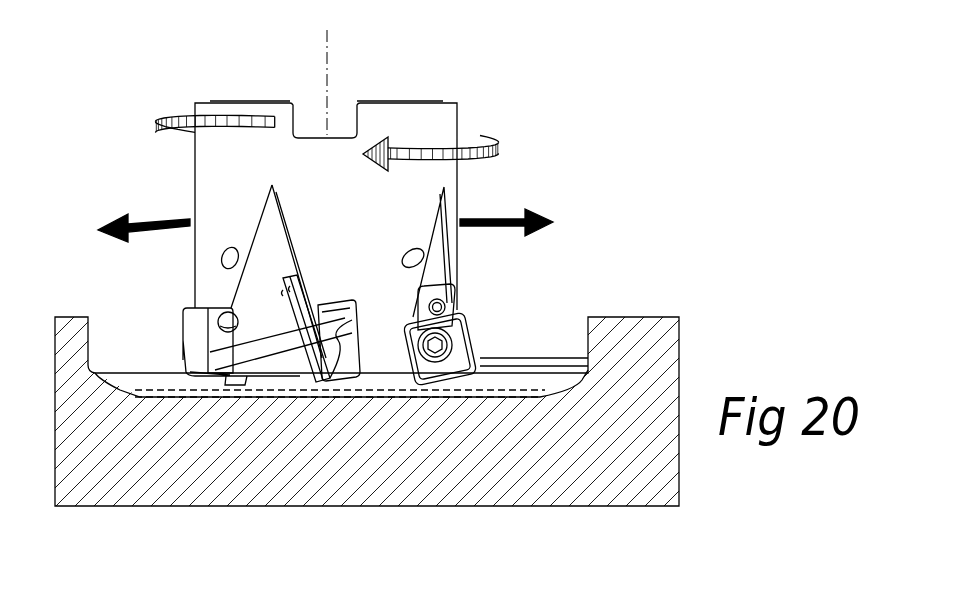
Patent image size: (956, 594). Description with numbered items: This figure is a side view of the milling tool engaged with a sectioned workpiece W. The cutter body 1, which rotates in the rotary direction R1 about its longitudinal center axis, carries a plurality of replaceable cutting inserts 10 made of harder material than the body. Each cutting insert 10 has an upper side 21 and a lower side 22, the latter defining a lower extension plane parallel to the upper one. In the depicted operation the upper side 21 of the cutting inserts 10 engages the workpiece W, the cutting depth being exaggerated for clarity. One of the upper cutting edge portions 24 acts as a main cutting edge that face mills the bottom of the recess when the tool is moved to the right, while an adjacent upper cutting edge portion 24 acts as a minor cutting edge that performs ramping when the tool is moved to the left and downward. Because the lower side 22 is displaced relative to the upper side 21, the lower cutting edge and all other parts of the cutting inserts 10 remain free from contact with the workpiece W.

The cutter body 1 is at (400, 118).
The cutting insert 10 is at (483, 320).
The upper side 21 is at (318, 373).
The lower side 22 is at (360, 333).
The upper cutting edge portion 24 is at (476, 356).
The workpiece W is at (628, 330).
The rotary direction R1 is at (480, 148).